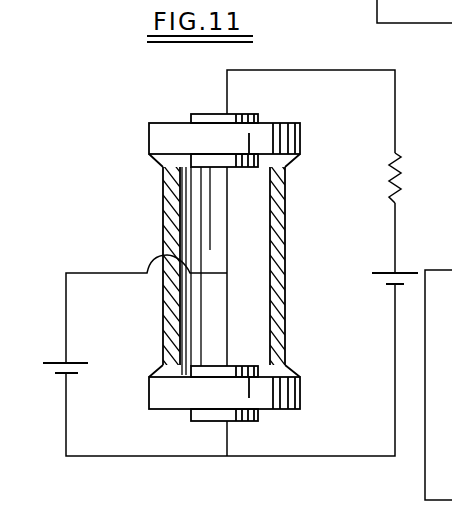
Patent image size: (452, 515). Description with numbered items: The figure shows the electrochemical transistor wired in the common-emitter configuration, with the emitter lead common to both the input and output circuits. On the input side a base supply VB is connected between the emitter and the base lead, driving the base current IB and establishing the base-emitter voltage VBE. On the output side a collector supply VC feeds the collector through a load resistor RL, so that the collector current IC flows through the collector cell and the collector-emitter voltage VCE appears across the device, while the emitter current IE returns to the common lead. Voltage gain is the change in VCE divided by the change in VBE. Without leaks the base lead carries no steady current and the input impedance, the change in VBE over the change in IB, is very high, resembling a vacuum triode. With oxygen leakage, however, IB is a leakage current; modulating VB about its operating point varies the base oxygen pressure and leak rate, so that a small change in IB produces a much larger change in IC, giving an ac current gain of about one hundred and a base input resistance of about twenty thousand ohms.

The emitter current IE is at (337, 333).
The collector current IC is at (311, 58).
The base current IB is at (101, 258).
The load resistor RL is at (413, 178).
The collector supply voltage VC is at (398, 264).
The base supply voltage VB is at (57, 350).
The base-emitter voltage VBE is at (150, 447).
The collector-emitter voltage VCE is at (320, 445).